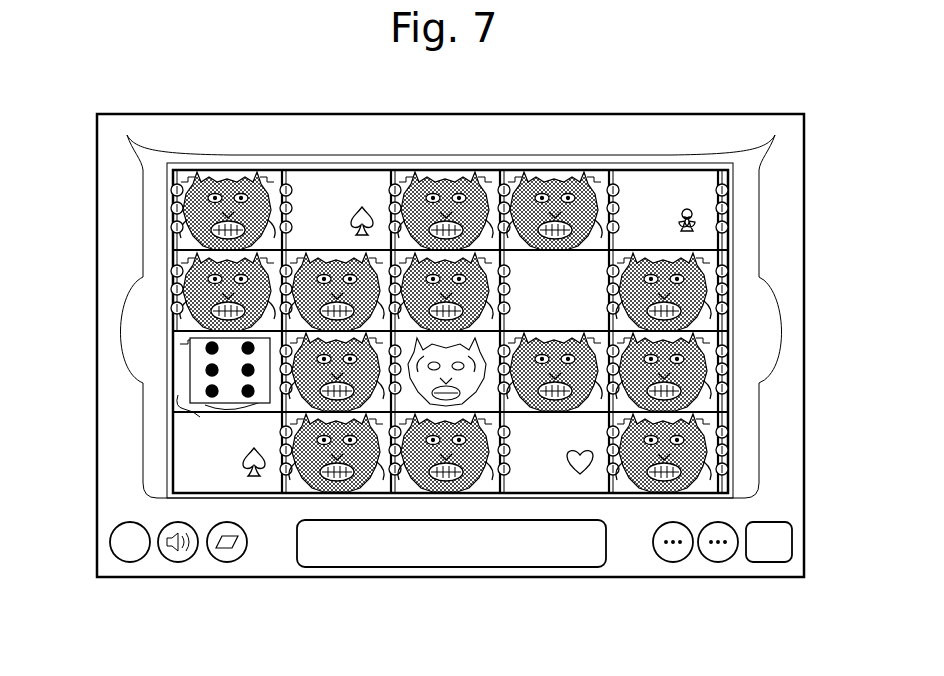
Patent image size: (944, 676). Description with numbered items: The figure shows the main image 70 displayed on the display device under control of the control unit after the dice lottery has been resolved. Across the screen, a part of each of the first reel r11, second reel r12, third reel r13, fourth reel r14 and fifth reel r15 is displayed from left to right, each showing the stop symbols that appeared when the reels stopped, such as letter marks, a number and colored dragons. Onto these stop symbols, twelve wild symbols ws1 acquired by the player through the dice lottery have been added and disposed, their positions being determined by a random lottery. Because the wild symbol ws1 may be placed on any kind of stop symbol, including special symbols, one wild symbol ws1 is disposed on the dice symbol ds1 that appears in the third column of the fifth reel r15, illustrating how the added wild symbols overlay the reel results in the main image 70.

The main image 70 is at (788, 101).
The wild symbol ws1 is at (177, 210).
The dice symbol ds1 is at (184, 344).
The first reel r11 is at (232, 482).
The second reel r12 is at (338, 492).
The third reel r13 is at (448, 492).
The fourth reel r14 is at (550, 480).
The fifth reel r15 is at (665, 495).